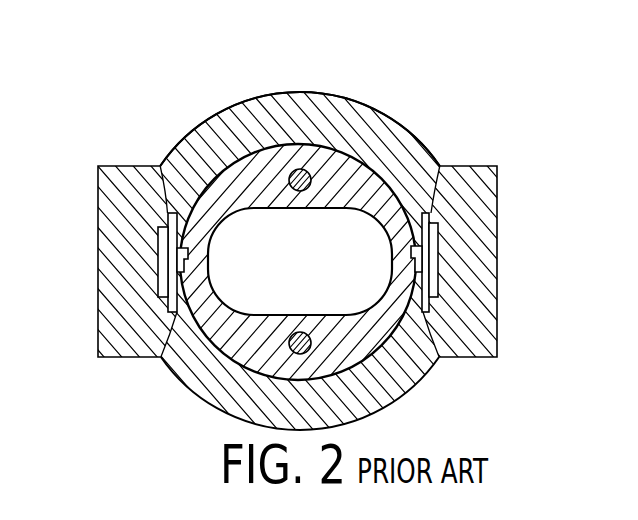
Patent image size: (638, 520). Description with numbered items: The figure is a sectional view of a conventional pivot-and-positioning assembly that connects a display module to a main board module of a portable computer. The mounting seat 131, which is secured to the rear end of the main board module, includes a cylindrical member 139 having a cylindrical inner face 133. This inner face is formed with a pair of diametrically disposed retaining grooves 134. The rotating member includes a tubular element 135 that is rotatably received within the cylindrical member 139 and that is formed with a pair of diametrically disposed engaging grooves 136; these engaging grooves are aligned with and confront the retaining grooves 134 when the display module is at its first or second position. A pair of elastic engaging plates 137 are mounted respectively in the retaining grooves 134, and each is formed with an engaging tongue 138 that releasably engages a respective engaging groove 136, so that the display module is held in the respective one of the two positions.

The mounting seat 131 is at (408, 127).
The cylindrical inner face 133 is at (357, 158).
The retaining grooves 134 is at (158, 166).
The tubular element 135 is at (237, 190).
The engaging grooves 136 is at (209, 251).
The elastic engaging plates 137 is at (160, 237).
The engaging tongues 138 is at (183, 260).
The cylindrical member 139 is at (299, 91).